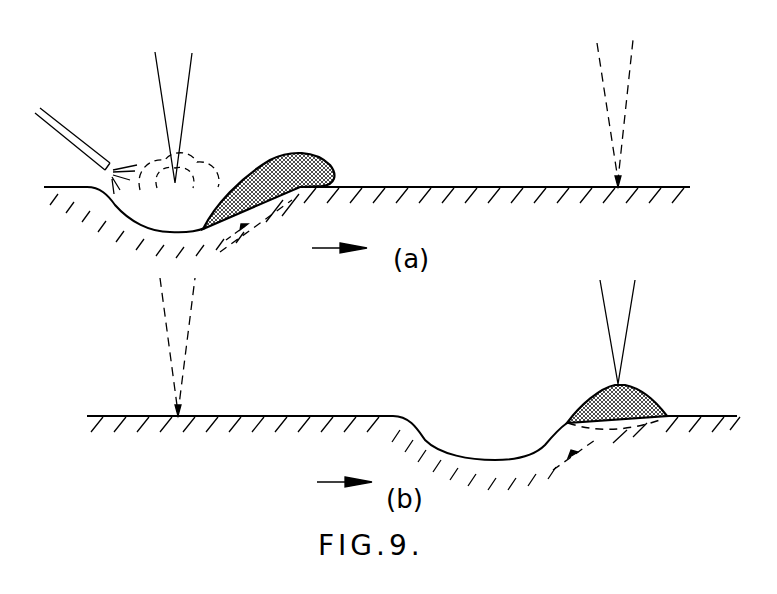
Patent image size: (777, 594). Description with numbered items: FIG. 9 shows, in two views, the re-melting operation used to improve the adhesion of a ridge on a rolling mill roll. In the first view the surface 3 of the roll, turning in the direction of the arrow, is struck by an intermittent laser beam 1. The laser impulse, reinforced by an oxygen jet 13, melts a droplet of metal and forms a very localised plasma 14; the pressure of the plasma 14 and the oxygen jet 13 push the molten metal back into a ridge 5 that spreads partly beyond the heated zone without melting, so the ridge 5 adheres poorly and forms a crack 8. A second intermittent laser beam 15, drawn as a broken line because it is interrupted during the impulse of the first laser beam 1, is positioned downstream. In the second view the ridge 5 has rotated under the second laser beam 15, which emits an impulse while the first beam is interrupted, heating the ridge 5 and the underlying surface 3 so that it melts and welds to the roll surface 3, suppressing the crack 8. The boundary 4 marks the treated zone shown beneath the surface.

The intermittent laser beam 1 is at (170, 78).
The surface of rolling mill roll 3 is at (55, 196).
The melted zone boundary 4 is at (247, 222).
The ridge 5 is at (302, 152).
The crack 8 is at (337, 185).
The oxygen jet 13 is at (60, 130).
The plasma 14 is at (202, 170).
The second intermittent laser beam 15 is at (610, 78).